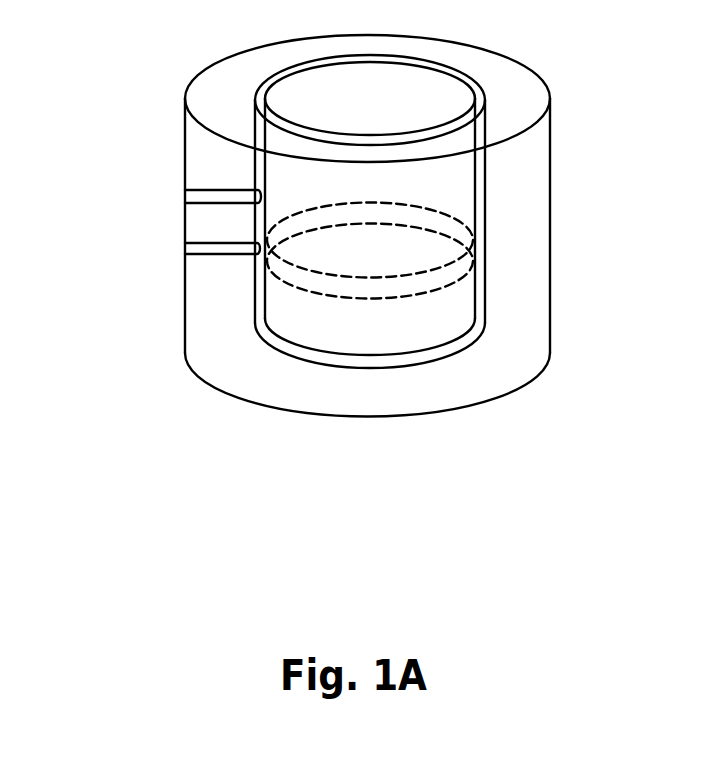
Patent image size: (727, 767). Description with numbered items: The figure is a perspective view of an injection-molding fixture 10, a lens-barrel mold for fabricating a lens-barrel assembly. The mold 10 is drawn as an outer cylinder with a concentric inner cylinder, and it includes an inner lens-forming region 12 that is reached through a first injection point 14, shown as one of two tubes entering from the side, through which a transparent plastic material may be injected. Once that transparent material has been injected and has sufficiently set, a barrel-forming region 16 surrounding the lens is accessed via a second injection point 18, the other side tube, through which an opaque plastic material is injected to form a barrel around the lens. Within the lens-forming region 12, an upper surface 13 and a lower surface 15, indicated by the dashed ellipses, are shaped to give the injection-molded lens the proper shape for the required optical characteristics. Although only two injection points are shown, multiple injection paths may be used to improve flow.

The injection-molding fixture 10 is at (152, 71).
The inner lens-forming region 12 is at (487, 258).
The upper surface 13 is at (449, 199).
The first injection point 14 is at (173, 258).
The lower surface 15 is at (354, 312).
The barrel-forming region 16 is at (242, 309).
The second injection point 18 is at (170, 207).